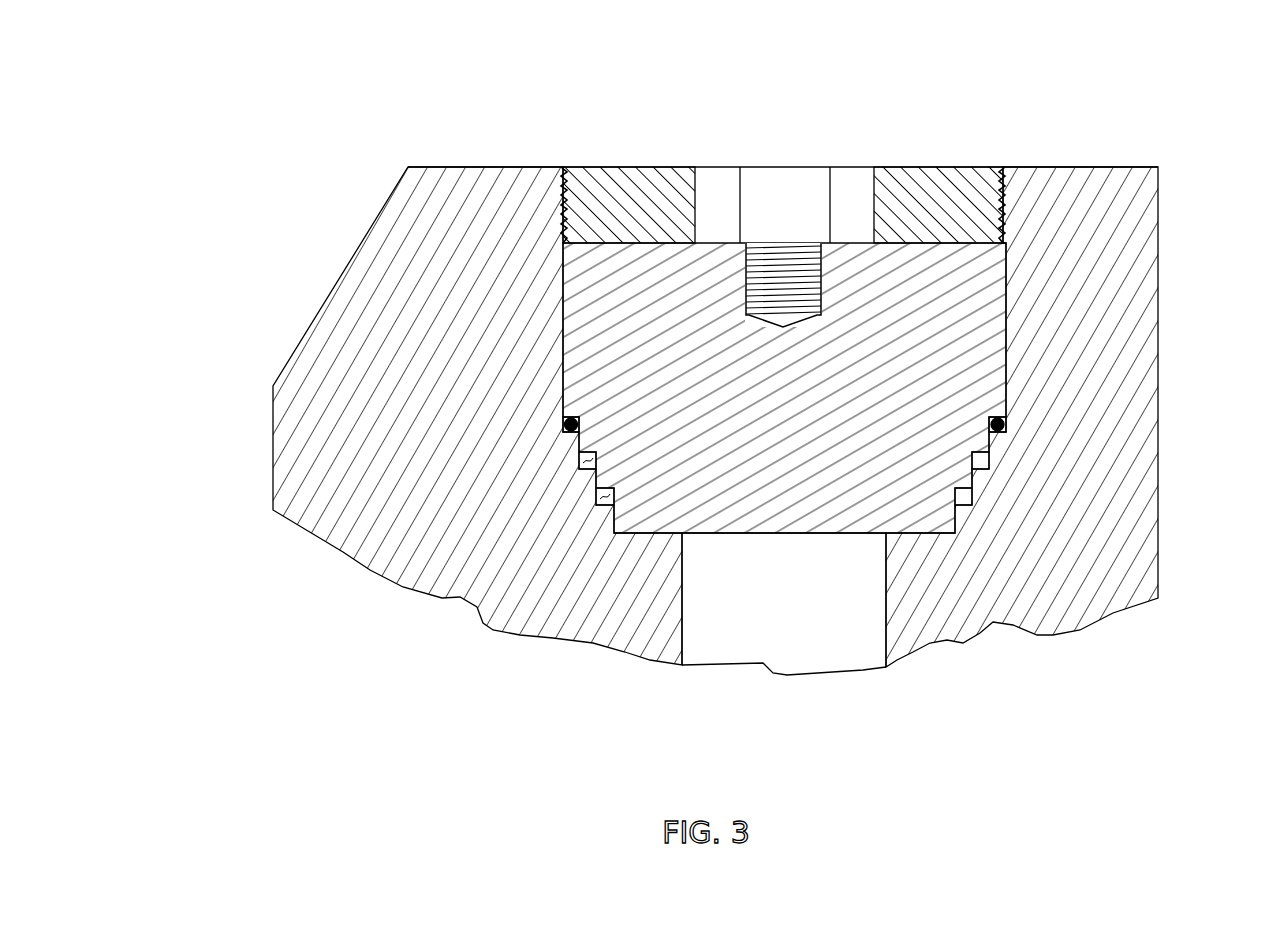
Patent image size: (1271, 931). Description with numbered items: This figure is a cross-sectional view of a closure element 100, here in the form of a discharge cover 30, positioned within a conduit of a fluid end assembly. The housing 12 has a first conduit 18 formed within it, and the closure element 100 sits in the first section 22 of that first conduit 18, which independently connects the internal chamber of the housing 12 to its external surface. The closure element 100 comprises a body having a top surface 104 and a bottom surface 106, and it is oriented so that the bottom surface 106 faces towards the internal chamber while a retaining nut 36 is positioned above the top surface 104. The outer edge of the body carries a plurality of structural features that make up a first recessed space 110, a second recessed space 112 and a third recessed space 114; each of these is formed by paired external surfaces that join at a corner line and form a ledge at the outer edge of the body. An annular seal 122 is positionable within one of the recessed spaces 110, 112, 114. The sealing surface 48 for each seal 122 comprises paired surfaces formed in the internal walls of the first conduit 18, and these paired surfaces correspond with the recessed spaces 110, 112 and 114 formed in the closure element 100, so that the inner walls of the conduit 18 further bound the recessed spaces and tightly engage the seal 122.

The housing 12 is at (393, 192).
The first conduit 18 is at (736, 636).
The first section 22 is at (886, 633).
The discharge cover 30 is at (958, 325).
The retaining nut 36 is at (943, 167).
The sealing surface 48 is at (565, 420).
The closure element 100 is at (655, 278).
The top surface 104 is at (842, 243).
The bottom surface 106 is at (802, 533).
The first recessed space 110 is at (397, 329).
The second recessed space 112 is at (580, 465).
The third recessed space 114 is at (600, 500).
The annular seal 122 is at (1005, 422).